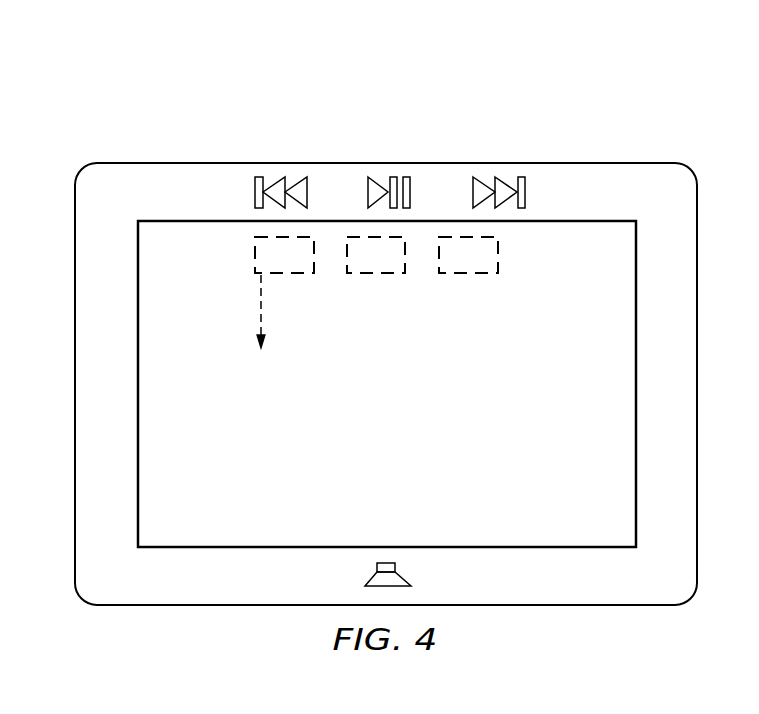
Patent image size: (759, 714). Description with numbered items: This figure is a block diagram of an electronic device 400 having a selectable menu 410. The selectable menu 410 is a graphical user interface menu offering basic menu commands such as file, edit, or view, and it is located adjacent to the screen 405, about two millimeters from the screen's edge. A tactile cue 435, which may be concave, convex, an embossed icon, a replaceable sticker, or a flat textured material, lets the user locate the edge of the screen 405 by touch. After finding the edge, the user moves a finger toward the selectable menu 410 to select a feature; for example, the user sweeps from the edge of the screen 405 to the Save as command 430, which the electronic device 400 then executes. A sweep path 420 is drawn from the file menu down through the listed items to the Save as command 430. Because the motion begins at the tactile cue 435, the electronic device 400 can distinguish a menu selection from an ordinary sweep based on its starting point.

The electronic device 400 is at (486, 68).
The screen 405 is at (573, 240).
The selectable menu 410 is at (478, 298).
The menu selection path 420 is at (258, 305).
The Save as command 430 is at (333, 342).
The tactile cue 435 is at (305, 191).